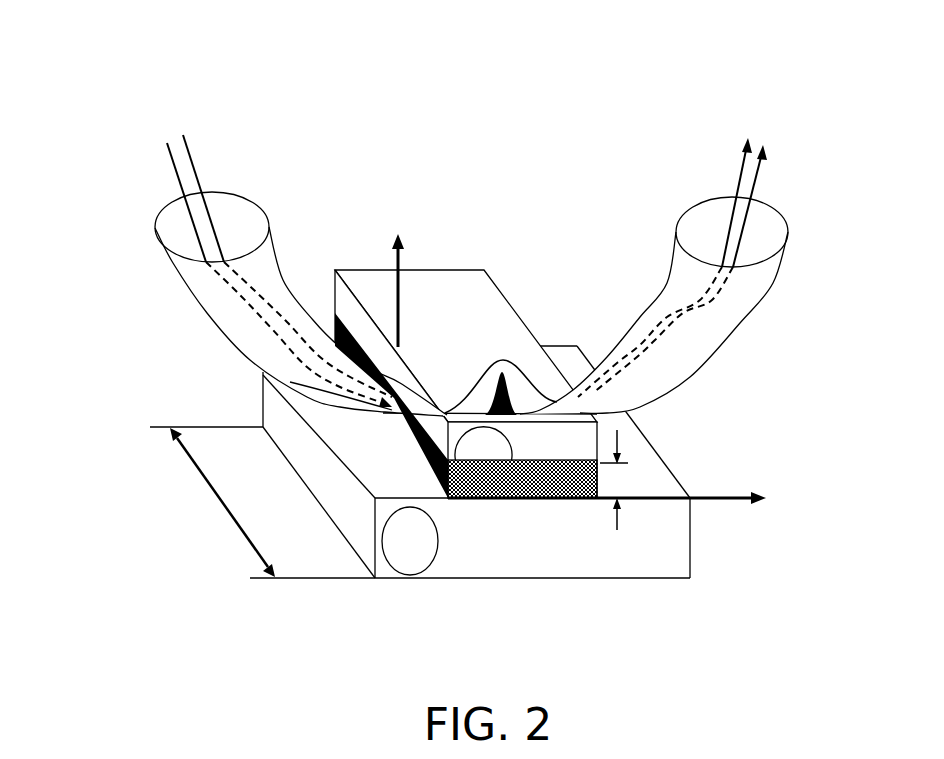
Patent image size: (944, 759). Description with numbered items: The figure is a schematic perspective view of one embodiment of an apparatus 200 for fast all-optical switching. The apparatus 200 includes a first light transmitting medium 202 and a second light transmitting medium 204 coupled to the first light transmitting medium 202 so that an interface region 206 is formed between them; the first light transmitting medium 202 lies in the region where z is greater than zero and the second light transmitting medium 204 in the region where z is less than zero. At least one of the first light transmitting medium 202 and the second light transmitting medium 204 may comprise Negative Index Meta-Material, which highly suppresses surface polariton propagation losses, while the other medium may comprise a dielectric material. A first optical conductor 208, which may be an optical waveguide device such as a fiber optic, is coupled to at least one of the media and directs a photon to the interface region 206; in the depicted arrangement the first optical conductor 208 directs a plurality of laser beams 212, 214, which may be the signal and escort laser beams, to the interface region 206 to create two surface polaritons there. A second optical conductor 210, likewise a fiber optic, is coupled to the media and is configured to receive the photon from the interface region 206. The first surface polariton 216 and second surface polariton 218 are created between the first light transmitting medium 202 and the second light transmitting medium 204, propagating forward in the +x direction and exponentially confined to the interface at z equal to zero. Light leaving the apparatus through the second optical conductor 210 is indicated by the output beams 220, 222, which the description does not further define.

The apparatus for fast all-optical switching 200 is at (84, 71).
The first light transmitting medium 202 is at (484, 270).
The second light transmitting medium 204 is at (692, 472).
The interface region 206 is at (432, 462).
The first optical conductor 208 is at (155, 238).
The second optical conductor 210 is at (786, 245).
The laser beam 212 is at (174, 166).
The laser beam 214 is at (187, 147).
The first surface polariton 216 is at (485, 372).
The second surface polariton 218 is at (500, 358).
The output light ray 220 is at (763, 170).
The output light ray 222 is at (738, 182).